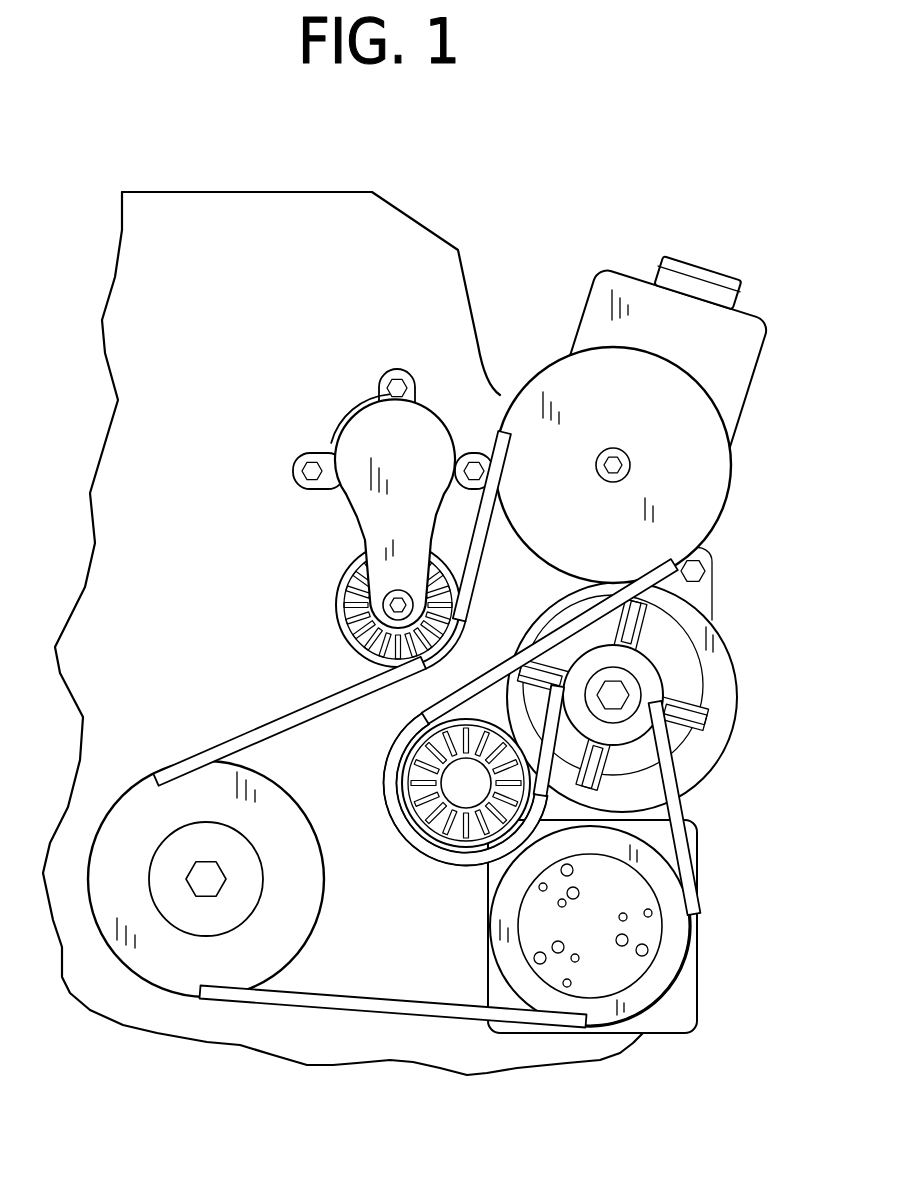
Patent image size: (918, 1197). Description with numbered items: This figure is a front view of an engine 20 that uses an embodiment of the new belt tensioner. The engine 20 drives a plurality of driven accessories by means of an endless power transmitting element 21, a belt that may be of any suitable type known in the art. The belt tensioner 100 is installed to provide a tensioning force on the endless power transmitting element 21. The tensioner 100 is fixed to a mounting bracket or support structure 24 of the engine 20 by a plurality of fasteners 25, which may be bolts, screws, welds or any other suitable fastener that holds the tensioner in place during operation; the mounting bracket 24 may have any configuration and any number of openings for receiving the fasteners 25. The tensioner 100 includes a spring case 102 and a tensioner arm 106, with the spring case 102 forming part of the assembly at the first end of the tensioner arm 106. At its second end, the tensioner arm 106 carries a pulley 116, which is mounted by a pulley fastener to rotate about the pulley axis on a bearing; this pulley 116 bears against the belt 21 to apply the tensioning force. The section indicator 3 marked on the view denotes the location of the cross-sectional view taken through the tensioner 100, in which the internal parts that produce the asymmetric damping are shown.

The engine 20 is at (496, 182).
The mounting bracket or support structure 24 is at (470, 280).
The endless power transmitting element 21 is at (267, 725).
The fasteners 25 is at (382, 378).
The belt tensioner 100 is at (313, 521).
The spring case 102 is at (401, 511).
The tensioner arm 106 is at (425, 531).
The pulley 116 is at (336, 600).
The section line for FIG. 3 is at (397, 362).